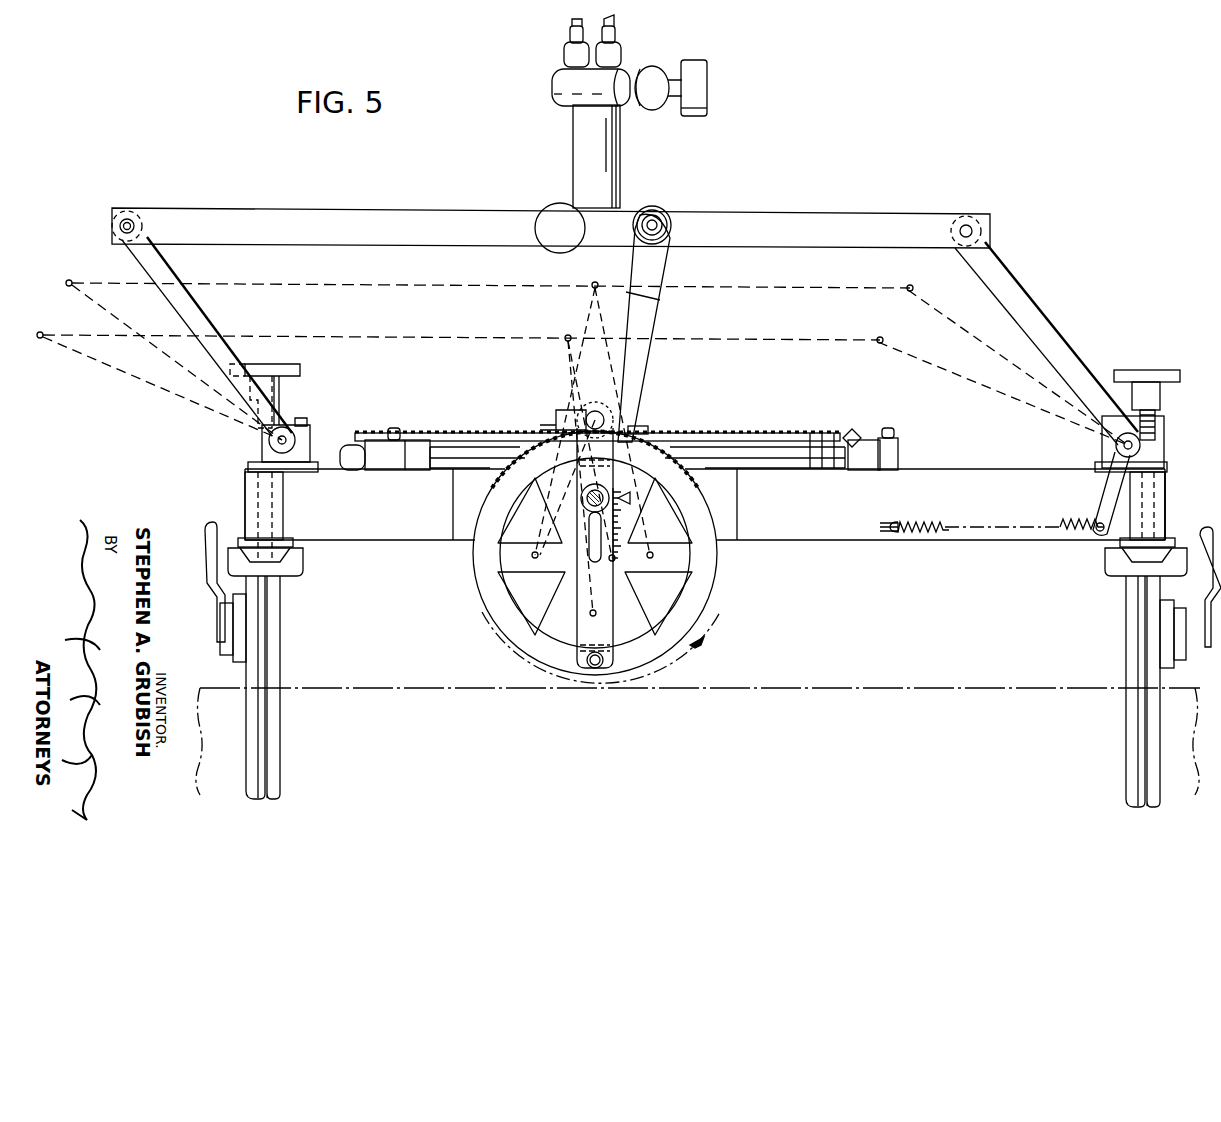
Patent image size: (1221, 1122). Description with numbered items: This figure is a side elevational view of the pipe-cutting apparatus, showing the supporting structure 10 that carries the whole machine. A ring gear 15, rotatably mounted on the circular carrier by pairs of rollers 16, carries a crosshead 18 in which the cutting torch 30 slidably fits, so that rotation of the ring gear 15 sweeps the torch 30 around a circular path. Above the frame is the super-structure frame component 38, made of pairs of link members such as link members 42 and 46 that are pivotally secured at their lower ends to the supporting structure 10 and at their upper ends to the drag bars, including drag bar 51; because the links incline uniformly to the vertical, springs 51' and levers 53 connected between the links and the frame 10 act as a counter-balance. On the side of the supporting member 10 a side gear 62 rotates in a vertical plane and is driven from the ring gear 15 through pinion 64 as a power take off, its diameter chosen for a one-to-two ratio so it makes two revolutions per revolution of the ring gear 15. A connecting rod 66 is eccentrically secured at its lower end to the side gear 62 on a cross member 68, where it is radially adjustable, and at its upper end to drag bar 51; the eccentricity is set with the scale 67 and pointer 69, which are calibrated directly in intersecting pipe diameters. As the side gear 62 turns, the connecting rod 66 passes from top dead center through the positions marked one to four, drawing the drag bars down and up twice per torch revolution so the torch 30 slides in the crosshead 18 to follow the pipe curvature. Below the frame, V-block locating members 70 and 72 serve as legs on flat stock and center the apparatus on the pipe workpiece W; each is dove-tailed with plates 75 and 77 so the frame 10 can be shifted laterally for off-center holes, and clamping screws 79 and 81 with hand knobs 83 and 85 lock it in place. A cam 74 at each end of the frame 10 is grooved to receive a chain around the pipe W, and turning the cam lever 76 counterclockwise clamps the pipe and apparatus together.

The supporting structure 10 is at (402, 541).
The ring gear 15 is at (447, 430).
The rollers 16 is at (425, 435).
The crosshead 18 is at (648, 430).
The cutting torch 30 is at (617, 166).
The super-structure frame component 38 is at (437, 228).
The link member 42 is at (1038, 310).
The link member 46 is at (222, 378).
The drag bar 51 is at (807, 206).
The springs 51' is at (992, 555).
The levers 53 is at (1130, 487).
The side gear 62 is at (703, 604).
The pinion 64 is at (583, 416).
The connecting rod 66 is at (636, 368).
The scale 67 is at (622, 526).
The cross member 68 is at (580, 640).
The pointer 69 is at (630, 497).
The locating member 70 is at (1128, 641).
The locating member 72 is at (278, 650).
The cam 74 is at (235, 650).
The plate 75 is at (1120, 558).
The cam lever 76 is at (206, 530).
The plate 77 is at (290, 560).
The clamping screw 79 is at (1162, 520).
The clamping screw 81 is at (256, 490).
The hand knob 83 is at (1140, 378).
The hand knob 85 is at (300, 372).
The pipe workpiece W is at (860, 690).